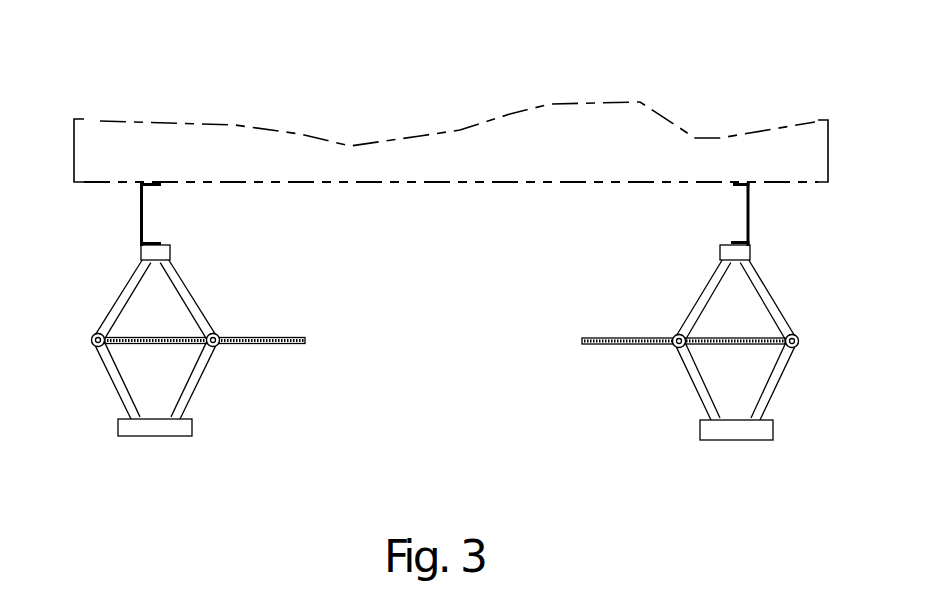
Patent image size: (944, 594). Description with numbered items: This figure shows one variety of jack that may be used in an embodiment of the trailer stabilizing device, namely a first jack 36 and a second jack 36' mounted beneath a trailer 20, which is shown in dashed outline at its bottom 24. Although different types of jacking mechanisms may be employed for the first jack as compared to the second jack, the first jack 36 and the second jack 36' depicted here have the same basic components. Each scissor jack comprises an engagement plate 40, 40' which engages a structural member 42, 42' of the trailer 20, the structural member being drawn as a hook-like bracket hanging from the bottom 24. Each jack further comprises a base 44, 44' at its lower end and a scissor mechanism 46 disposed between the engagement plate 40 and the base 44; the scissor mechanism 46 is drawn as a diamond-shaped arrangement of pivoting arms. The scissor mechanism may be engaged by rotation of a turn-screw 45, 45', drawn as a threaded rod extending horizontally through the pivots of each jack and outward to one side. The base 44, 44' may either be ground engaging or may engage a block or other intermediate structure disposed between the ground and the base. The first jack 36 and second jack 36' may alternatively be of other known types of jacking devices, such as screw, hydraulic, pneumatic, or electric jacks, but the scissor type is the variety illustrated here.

The trailer 20 is at (532, 76).
The bottom 24 is at (595, 182).
The first jack 36 is at (777, 340).
The second jack 36' is at (128, 339).
The engagement plate 40 is at (776, 258).
The engagement plate 40' is at (191, 243).
The structural member 42 is at (793, 214).
The structural member 42' is at (150, 214).
The base 44 is at (771, 439).
The base 44' is at (191, 432).
The turn-screw 45 is at (667, 325).
The turn-screw 45' is at (230, 328).
The scissor mechanism 46 is at (796, 325).